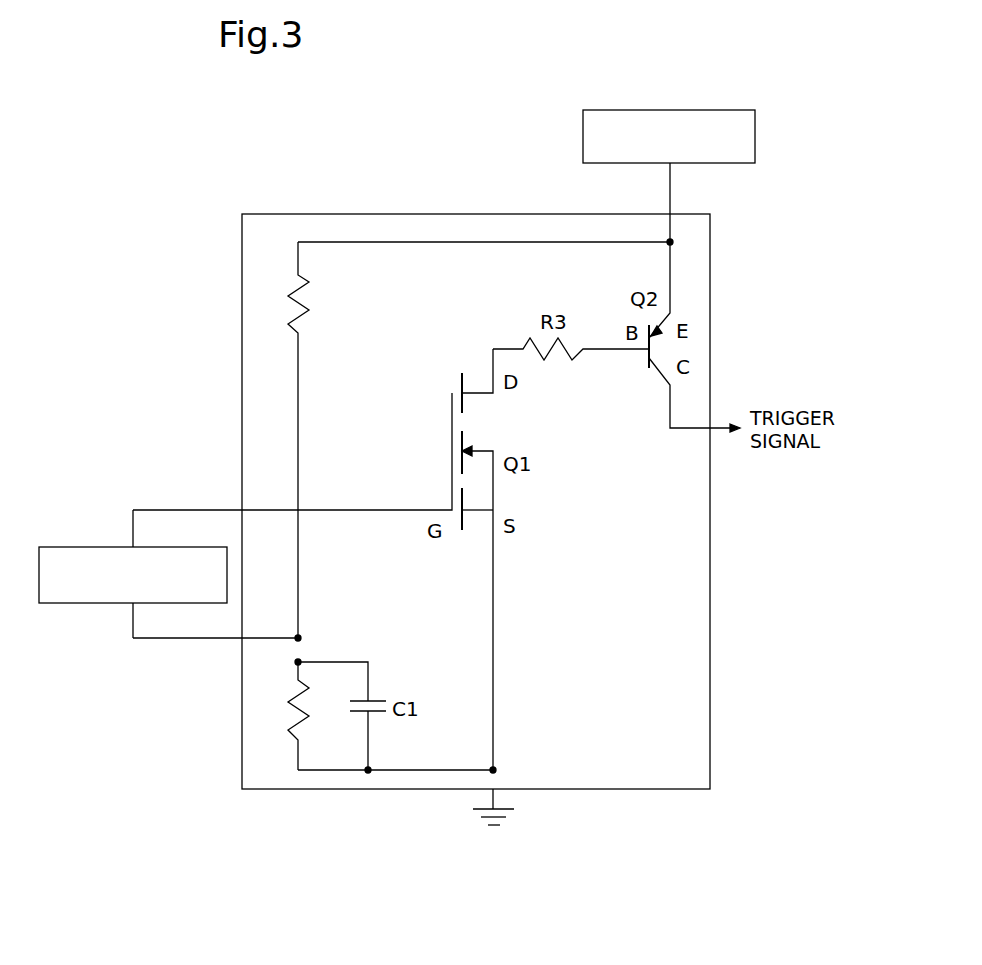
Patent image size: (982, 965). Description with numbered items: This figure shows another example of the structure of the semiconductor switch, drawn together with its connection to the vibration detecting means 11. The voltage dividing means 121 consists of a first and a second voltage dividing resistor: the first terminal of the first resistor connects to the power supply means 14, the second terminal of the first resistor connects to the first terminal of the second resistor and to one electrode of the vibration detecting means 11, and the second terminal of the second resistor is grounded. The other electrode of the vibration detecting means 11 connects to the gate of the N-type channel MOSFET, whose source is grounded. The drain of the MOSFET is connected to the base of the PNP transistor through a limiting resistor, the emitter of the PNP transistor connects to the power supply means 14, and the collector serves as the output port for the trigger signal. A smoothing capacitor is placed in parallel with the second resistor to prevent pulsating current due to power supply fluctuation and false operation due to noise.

The power supply means 14 is at (755, 132).
The vibration detecting means 11 is at (53, 604).
The voltage dividing means 121 is at (293, 323).